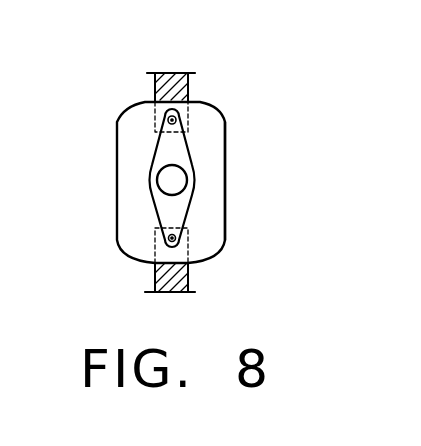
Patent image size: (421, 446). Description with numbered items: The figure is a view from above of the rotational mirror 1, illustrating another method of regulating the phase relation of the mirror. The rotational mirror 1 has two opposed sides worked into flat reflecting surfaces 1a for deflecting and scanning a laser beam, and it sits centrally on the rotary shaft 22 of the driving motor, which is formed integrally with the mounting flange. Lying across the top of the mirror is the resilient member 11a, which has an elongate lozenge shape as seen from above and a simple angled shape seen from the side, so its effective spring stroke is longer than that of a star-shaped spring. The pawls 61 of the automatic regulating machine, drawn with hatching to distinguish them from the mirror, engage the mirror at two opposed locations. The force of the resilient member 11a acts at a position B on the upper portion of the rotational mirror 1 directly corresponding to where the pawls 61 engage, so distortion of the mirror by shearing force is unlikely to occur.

The rotational mirror 1 is at (228, 193).
The reflecting surfaces 1a is at (228, 150).
The rotary shaft 22 is at (157, 180).
The resilient member 11a is at (170, 212).
The pawls 61 is at (195, 87).
The position B is at (165, 108).